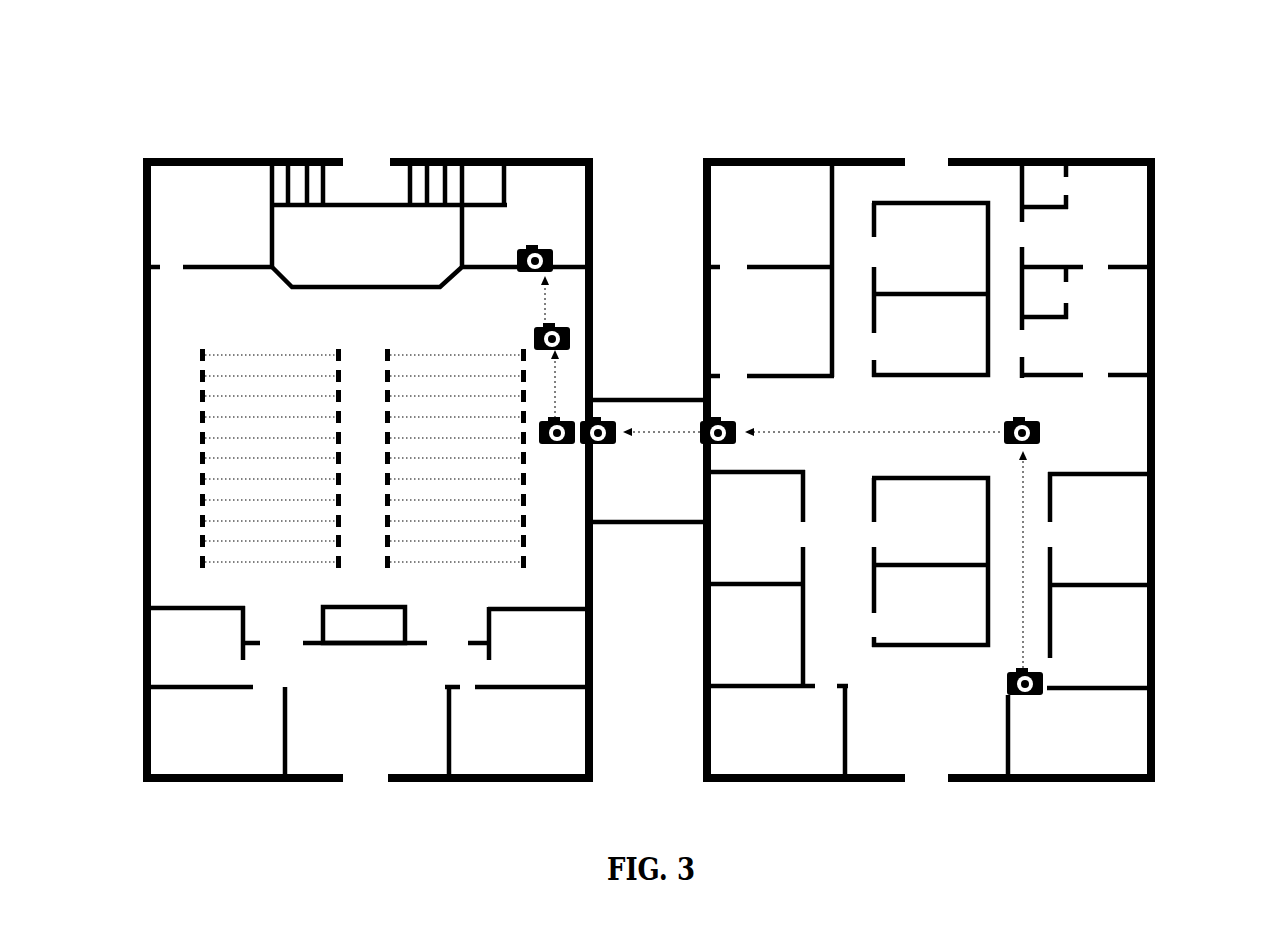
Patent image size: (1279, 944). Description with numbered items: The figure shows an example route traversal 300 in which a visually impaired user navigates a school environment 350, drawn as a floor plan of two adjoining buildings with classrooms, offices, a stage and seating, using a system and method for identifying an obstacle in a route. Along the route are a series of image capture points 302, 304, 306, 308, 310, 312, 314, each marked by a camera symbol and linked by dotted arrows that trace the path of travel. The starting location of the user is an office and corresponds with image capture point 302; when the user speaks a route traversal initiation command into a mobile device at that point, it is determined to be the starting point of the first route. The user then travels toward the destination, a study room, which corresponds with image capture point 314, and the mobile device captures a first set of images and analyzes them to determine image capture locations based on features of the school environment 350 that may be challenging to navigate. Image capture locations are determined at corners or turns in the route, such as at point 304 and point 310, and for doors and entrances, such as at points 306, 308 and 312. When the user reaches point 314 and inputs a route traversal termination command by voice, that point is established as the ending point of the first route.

The route traversal 300 is at (676, 405).
The school environment 350 is at (1193, 160).
The image capture point 302 is at (1042, 676).
The image capture point 304 is at (1040, 424).
The image capture point 306 is at (713, 414).
The image capture point 308 is at (597, 416).
The image capture point 310 is at (548, 443).
The image capture point 312 is at (568, 326).
The image capture point 314 is at (553, 252).